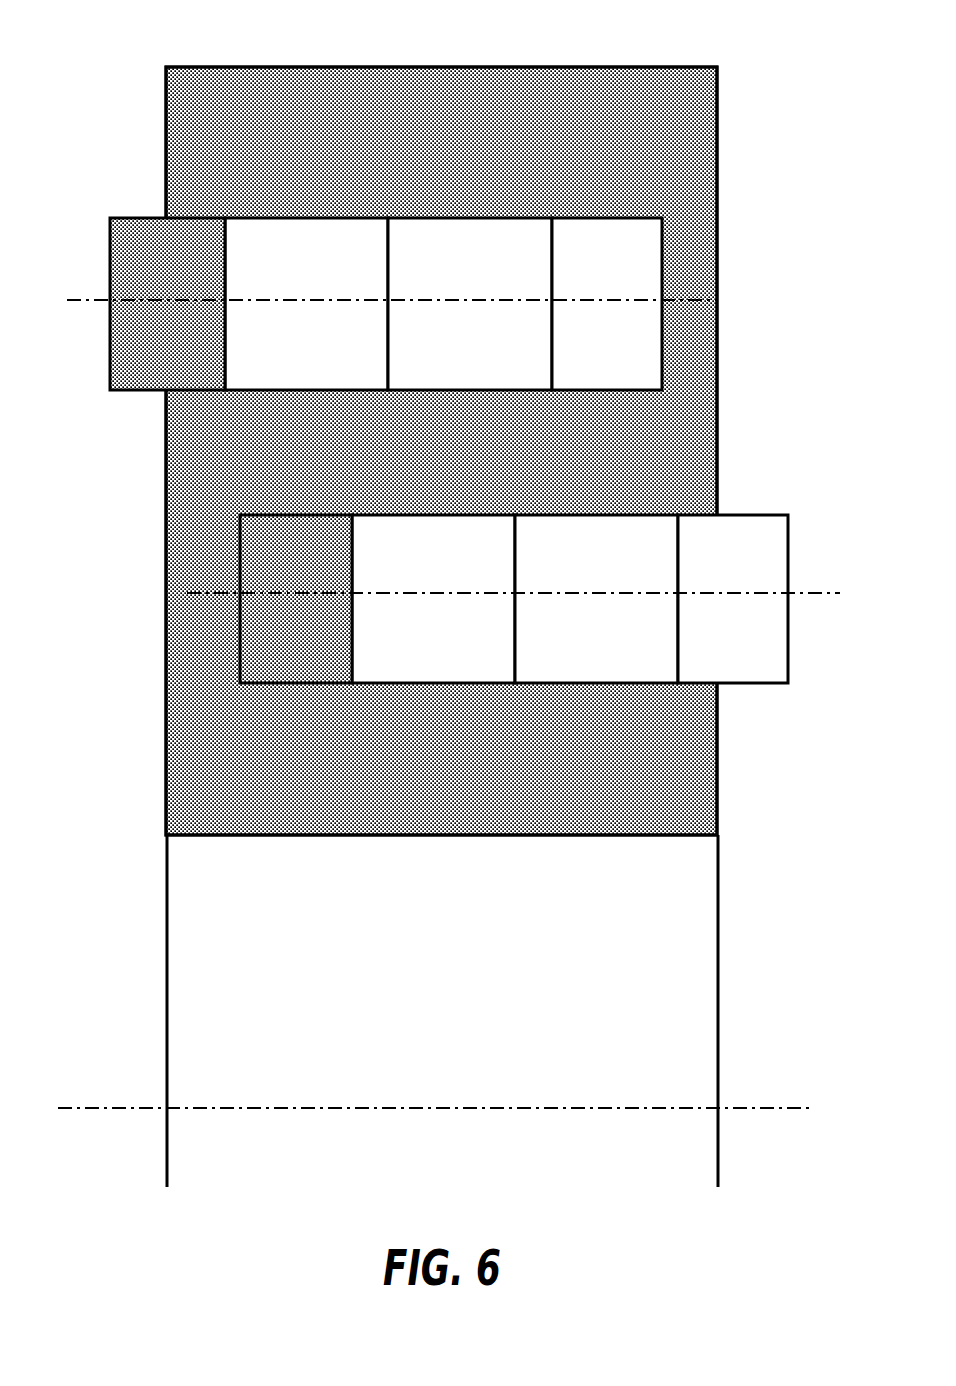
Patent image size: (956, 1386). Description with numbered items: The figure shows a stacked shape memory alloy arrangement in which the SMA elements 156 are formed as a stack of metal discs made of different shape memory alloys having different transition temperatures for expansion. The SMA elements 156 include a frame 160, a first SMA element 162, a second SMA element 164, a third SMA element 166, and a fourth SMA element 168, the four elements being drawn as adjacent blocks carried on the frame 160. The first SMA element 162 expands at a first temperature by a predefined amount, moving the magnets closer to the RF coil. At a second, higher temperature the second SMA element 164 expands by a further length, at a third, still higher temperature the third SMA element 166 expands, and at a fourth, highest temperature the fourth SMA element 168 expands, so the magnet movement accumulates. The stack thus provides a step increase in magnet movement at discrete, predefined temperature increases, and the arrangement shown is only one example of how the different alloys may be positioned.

The SMA elements 156 is at (442, 595).
The frame 160 is at (475, 778).
The first SMA element 162 is at (641, 281).
The second SMA element 164 is at (504, 367).
The third SMA element 166 is at (336, 367).
The fourth SMA element 168 is at (203, 365).